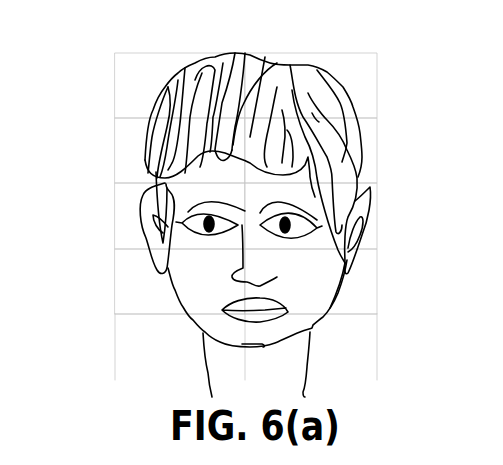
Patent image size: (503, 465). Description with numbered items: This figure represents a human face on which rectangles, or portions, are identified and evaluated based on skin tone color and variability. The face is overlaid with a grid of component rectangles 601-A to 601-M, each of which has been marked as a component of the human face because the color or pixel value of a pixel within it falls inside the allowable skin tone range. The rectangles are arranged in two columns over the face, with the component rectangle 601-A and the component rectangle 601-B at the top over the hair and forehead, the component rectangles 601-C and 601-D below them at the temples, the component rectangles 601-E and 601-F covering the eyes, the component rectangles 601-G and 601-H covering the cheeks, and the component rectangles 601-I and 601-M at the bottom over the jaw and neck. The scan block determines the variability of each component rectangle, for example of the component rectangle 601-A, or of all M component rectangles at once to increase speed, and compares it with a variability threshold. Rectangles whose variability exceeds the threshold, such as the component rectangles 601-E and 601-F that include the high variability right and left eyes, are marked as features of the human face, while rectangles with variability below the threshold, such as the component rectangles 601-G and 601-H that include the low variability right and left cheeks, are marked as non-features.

The component rectangle 601-A is at (117, 83).
The component rectangle 601-B is at (377, 90).
The component rectangle 601-C is at (117, 153).
The component rectangle 601-D is at (377, 150).
The component rectangle 601-E is at (118, 213).
The component rectangle 601-F is at (377, 230).
The component rectangle 601-G is at (116, 265).
The component rectangle 601-H is at (377, 282).
The component rectangle 601-I is at (119, 345).
The component rectangle 601-M is at (377, 347).